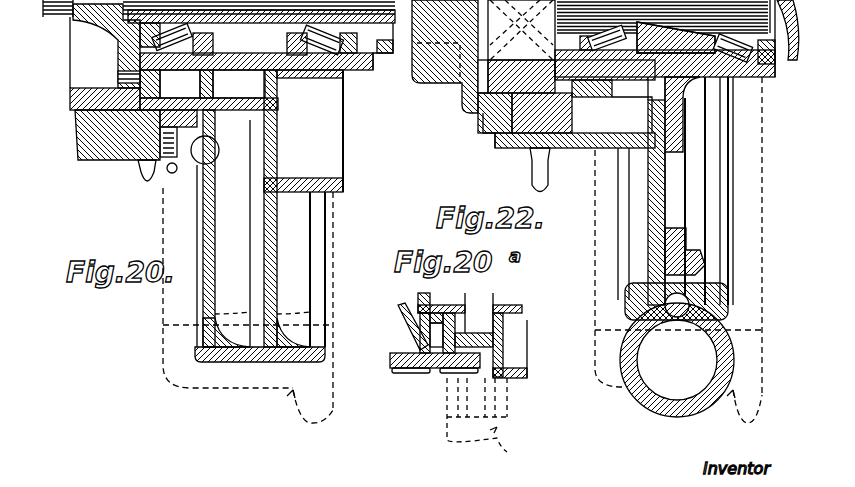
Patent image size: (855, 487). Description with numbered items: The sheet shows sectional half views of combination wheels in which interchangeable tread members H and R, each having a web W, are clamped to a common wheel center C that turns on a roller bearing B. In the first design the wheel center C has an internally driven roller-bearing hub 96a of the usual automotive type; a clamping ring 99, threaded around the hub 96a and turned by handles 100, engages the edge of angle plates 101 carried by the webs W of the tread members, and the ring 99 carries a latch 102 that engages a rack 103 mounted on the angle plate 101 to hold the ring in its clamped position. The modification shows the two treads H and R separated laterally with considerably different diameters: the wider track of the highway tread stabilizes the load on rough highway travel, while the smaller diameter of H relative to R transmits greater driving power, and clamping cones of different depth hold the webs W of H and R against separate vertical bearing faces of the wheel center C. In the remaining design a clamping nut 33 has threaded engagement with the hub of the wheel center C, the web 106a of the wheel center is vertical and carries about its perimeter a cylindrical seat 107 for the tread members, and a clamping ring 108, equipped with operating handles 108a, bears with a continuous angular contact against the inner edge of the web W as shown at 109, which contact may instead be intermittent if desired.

In FIG. 20, the hub 96a is at (88, 88).
In FIG. 20, the rack 103 is at (222, 100).
In FIG. 20, the angle plate 101 is at (217, 138).
In FIG. 20, the clamping ring 99 is at (88, 162).
In FIG. 20, the handle 100 is at (157, 167).
In FIG. 20, the latch 102 is at (168, 176).
In FIG. 20, the web W is at (203, 233).
In FIG. 22, the web W is at (645, 238).
In FIG. 20A, the web W is at (427, 320).
In FIG. 20, the wheel center C is at (288, 145).
In FIG. 22, the wheel center C is at (685, 113).
In FIG. 20A, the wheel center C is at (503, 343).
In FIG. 20, the roller bearing B is at (335, 68).
In FIG. 20, the highway tread member H is at (250, 358).
In FIG. 22, the highway tread member H is at (645, 405).
In FIG. 20A, the highway tread member H is at (407, 373).
In FIG. 20, the rail tread member R is at (293, 392).
In FIG. 22, the rail tread member R is at (733, 392).
In FIG. 20A, the rail tread member R is at (497, 427).
In FIG. 22, the clamping nut 33 is at (420, 84).
In FIG. 22, the clamping ring 108 is at (496, 140).
In FIG. 22, the operating handle 108a is at (540, 174).
In FIG. 22, the angular contact 109 is at (643, 145).
In FIG. 22, the web 106a is at (683, 145).
In FIG. 22, the cylindrical seat 107 is at (705, 252).